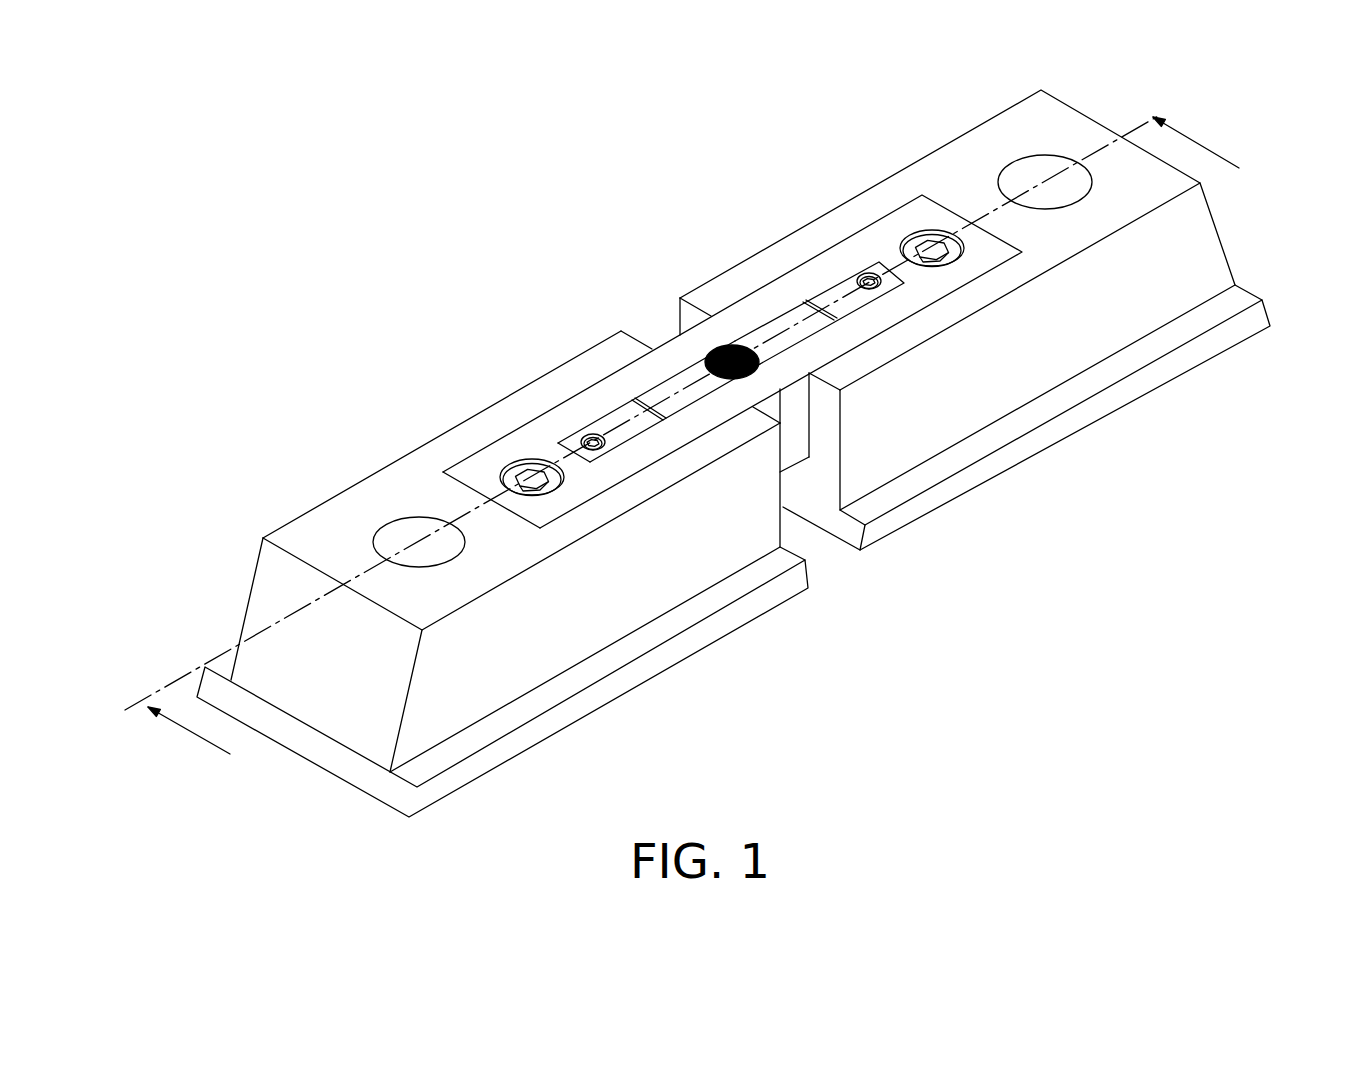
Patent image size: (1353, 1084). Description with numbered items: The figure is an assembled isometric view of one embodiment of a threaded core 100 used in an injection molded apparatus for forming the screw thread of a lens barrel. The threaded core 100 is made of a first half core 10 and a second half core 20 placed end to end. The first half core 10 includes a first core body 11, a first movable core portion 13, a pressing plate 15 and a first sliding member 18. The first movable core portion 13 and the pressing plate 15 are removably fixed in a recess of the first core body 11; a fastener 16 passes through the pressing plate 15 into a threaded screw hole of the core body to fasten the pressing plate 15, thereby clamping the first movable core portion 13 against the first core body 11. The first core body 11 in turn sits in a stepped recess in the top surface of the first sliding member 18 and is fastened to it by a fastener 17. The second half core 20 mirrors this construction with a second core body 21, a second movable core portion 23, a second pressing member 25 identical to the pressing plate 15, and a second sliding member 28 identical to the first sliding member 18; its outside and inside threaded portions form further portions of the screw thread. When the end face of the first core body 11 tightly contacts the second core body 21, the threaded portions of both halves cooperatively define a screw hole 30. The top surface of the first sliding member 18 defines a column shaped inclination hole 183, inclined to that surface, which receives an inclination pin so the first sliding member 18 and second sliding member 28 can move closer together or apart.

The threaded core 100 is at (376, 386).
The first half core 10 is at (587, 245).
The first core body 11 is at (652, 377).
The first movable core portion 13 is at (622, 374).
The pressing plate 15 is at (595, 422).
The fastener 16 is at (603, 450).
The fastener 17 is at (540, 488).
The first sliding member 18 is at (515, 415).
The inclination hole 183 is at (402, 543).
The second half core 20 is at (791, 133).
The second core body 21 is at (728, 325).
The second movable core portion 23 is at (765, 332).
The second pressing member 25 is at (832, 293).
The second sliding member 28 is at (782, 267).
The screw hole 30 is at (682, 337).